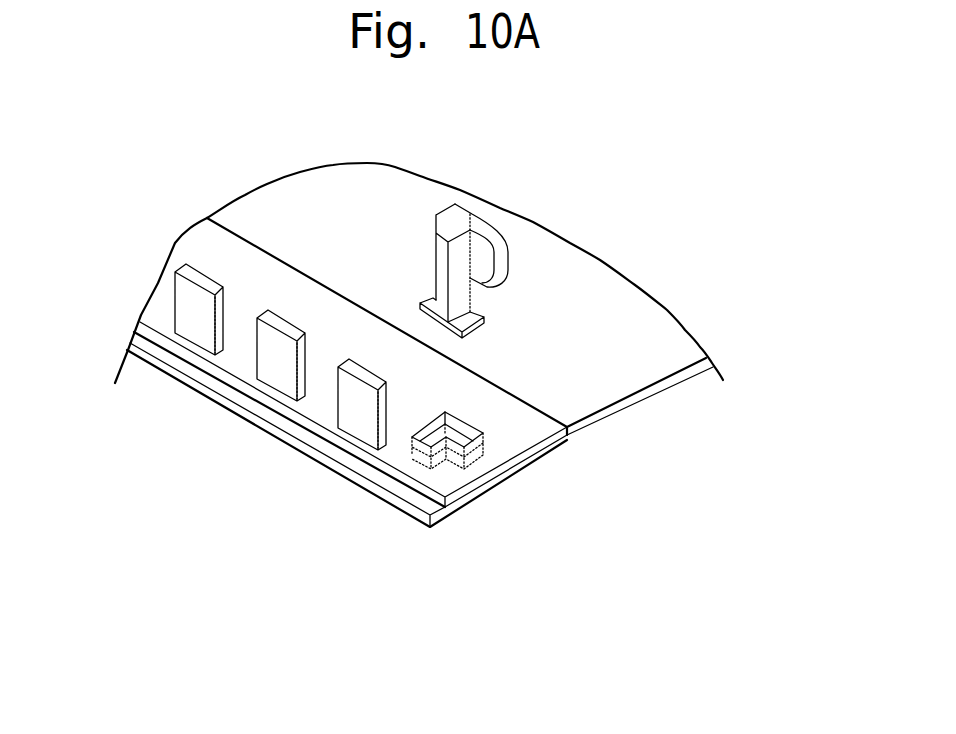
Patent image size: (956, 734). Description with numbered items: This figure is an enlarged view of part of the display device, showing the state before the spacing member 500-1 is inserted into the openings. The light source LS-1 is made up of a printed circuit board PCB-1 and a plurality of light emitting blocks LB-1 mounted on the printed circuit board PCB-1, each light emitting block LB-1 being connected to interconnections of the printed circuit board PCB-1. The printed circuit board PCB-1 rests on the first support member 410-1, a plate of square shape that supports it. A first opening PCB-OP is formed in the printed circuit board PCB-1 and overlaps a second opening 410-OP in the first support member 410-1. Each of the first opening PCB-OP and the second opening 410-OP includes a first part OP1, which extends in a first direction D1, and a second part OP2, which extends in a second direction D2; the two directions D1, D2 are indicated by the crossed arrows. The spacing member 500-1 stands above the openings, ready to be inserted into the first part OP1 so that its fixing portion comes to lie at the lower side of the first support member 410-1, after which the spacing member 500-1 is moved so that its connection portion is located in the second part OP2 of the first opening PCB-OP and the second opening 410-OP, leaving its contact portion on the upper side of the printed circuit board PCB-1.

The spacing member 500-1 is at (468, 222).
The printed circuit board PCB-1 is at (241, 363).
The light emitting blocks LB-1 is at (282, 370).
The light source LS-1 is at (217, 513).
The first support member 410-1 is at (332, 463).
The first opening PCB-OP is at (484, 438).
The second opening 410-OP is at (484, 450).
The first part OP1 is at (491, 427).
The second part OP2 is at (411, 436).
The first direction D1 is at (688, 470).
The second direction D2 is at (765, 468).